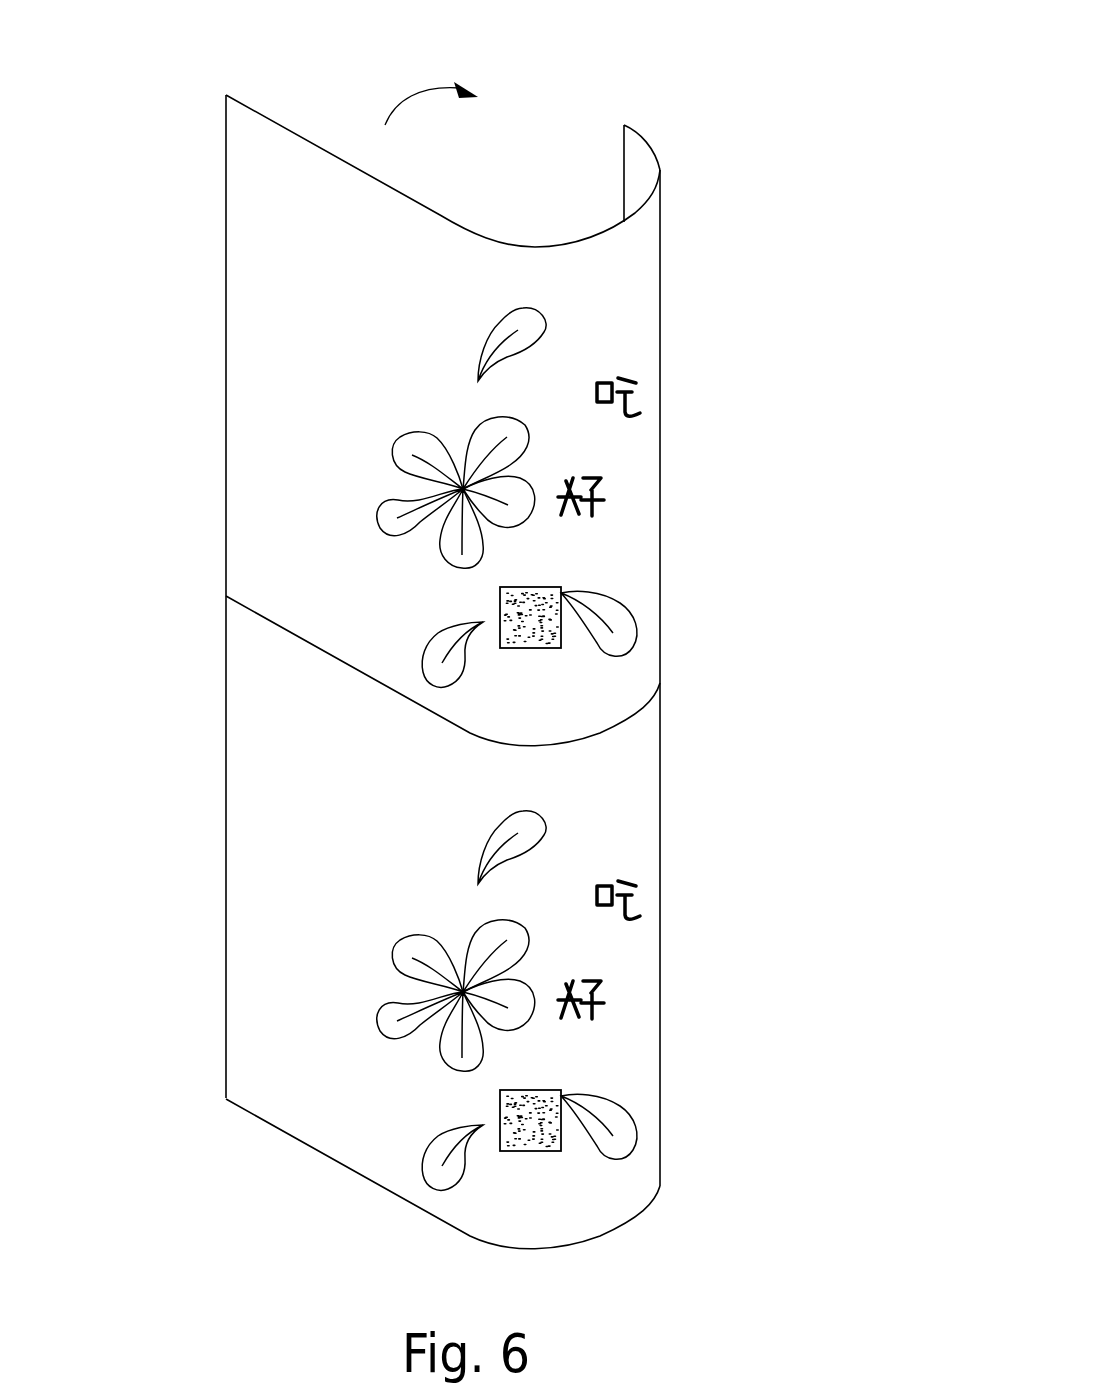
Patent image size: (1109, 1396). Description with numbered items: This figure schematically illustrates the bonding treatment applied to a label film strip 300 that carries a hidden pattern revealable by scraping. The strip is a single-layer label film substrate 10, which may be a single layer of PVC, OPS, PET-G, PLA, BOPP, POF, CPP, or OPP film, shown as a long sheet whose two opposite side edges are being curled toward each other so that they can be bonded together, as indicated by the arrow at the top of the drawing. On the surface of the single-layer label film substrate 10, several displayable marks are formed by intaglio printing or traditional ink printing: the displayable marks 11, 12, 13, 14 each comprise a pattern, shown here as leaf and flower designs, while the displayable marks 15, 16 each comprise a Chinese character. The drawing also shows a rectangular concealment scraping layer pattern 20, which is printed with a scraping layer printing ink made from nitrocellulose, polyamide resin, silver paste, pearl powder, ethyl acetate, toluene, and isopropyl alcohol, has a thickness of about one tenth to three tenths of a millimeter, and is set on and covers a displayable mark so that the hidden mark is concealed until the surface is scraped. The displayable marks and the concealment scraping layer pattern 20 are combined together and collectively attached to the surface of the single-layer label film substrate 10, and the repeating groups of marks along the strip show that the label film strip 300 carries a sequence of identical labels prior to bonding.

The single-layer label film substrate 10 is at (642, 173).
The displayable mark 11 is at (518, 330).
The displayable mark 12 is at (433, 457).
The displayable mark 13 is at (442, 663).
The displayable mark 14 is at (602, 608).
The displayable mark 15 is at (620, 370).
The displayable mark 16 is at (608, 487).
The concealment scraping layer pattern 20 is at (523, 647).
The label film strip 300 is at (840, 80).